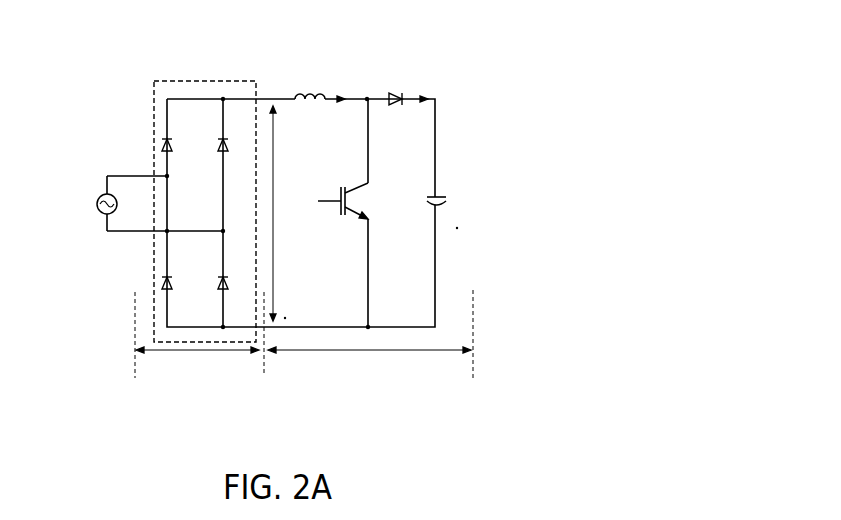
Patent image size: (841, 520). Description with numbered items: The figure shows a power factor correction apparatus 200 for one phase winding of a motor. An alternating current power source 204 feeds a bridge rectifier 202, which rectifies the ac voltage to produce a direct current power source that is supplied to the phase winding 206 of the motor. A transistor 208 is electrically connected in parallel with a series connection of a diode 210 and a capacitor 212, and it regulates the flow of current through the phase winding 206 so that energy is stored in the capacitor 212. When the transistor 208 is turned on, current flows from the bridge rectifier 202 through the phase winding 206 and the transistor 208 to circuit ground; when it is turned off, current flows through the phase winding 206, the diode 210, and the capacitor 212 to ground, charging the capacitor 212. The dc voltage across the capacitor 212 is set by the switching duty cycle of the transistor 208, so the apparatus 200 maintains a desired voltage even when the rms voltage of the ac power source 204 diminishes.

The power factor correction apparatus 200 is at (486, 54).
The bridge rectifier 202 is at (196, 78).
The alternating current power source 204 is at (97, 204).
The phase winding 206 is at (318, 92).
The transistor 208 is at (342, 189).
The diode 210 is at (393, 92).
The capacitor 212 is at (430, 193).